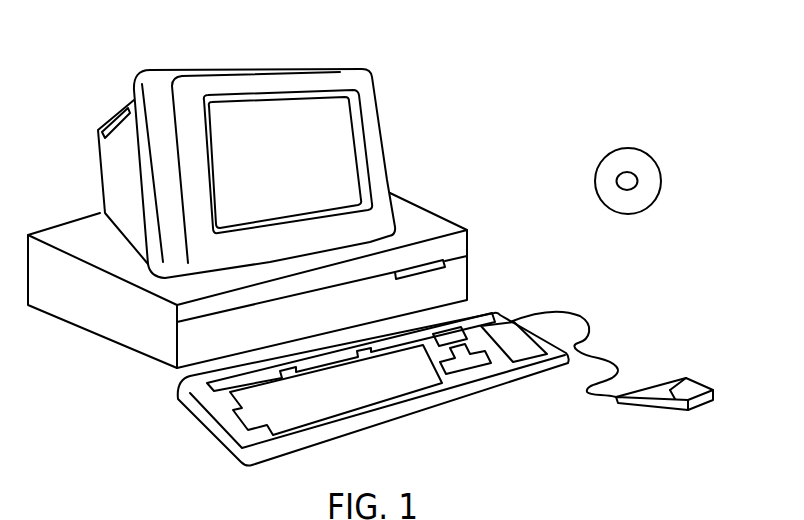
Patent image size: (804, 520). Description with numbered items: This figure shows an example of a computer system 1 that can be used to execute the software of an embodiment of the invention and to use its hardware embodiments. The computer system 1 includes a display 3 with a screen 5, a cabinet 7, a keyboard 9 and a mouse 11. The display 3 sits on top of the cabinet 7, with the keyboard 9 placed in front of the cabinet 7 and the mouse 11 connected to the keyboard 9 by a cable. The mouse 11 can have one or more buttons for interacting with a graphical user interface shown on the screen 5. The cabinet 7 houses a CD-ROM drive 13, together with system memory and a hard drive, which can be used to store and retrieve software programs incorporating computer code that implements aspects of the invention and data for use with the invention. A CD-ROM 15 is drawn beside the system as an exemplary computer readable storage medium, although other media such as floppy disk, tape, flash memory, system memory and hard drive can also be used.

The computer system 1 is at (583, 56).
The display 3 is at (384, 158).
The screen 5 is at (333, 120).
The cabinet 7 is at (132, 351).
The keyboard 9 is at (403, 421).
The mouse 11 is at (693, 380).
The CD-ROM drive 13 is at (444, 261).
The CD-ROM 15 is at (650, 157).